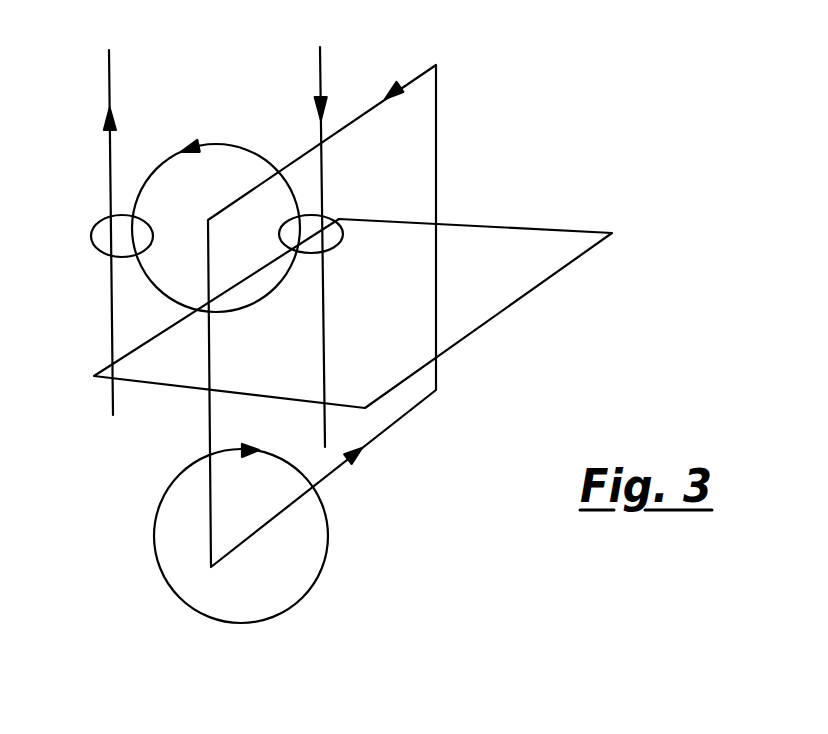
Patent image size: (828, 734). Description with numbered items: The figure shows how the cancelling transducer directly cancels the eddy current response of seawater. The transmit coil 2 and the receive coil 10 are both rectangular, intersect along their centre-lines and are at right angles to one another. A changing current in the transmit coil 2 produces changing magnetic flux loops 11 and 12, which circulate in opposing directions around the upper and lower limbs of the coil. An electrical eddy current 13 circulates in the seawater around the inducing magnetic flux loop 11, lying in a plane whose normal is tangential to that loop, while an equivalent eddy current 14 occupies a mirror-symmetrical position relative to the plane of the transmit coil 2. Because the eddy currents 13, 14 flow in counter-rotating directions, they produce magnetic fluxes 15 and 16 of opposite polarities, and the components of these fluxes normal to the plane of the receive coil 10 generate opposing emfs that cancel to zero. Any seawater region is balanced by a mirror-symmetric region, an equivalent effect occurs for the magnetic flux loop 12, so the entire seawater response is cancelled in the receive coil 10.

The transmit coil 2 is at (436, 128).
The receive coil 10 is at (542, 285).
The magnetic flux loop 11 is at (232, 145).
The magnetic flux loop 12 is at (328, 547).
The eddy current 13 is at (92, 230).
The eddy current 14 is at (337, 246).
The magnetic flux 15 is at (110, 85).
The magnetic flux 16 is at (320, 72).